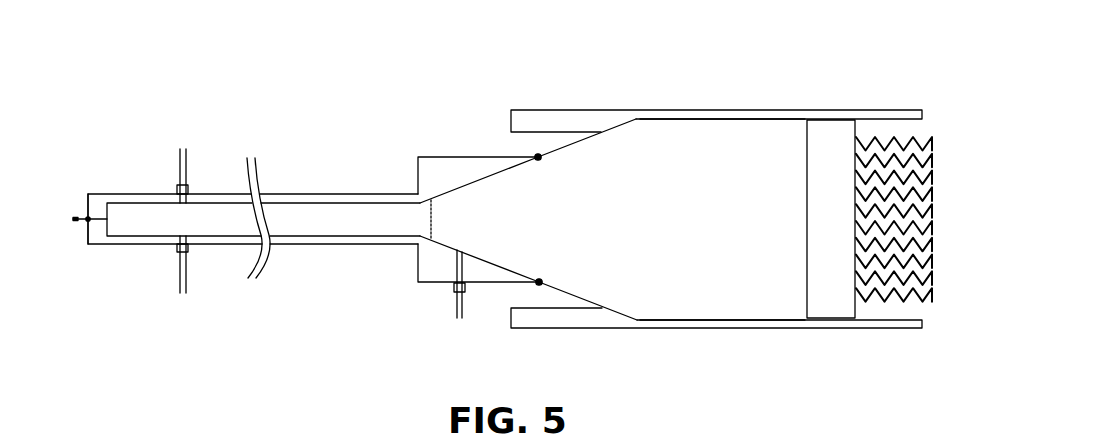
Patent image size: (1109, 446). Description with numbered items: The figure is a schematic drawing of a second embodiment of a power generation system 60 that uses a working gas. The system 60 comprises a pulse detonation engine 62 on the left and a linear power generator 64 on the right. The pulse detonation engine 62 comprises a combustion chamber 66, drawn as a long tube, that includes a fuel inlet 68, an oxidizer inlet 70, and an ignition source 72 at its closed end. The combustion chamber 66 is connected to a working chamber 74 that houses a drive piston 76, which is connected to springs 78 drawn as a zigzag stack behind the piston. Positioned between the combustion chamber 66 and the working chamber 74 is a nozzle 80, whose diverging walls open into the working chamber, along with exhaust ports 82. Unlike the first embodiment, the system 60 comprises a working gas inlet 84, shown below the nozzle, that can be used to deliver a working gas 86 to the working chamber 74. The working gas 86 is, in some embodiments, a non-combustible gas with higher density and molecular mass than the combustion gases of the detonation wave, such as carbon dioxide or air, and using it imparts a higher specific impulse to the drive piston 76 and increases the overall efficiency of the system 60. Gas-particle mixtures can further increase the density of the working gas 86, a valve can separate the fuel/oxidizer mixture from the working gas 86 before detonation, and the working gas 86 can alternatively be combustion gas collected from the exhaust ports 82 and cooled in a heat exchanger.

The power generation system 60 is at (318, 100).
The pulse detonation engine 62 is at (204, 352).
The linear power generator 64 is at (748, 353).
The combustion chamber 66 is at (305, 192).
The fuel inlet 68 is at (188, 162).
The oxidizer inlet 70 is at (179, 268).
The ignition source 72 is at (80, 214).
The working chamber 74 is at (740, 110).
The drive piston 76 is at (820, 219).
The springs 78 is at (950, 208).
The nozzle 80 is at (490, 195).
The exhaust ports 82 is at (540, 145).
The working gas inlet 84 is at (455, 271).
The working gas 86 is at (628, 229).